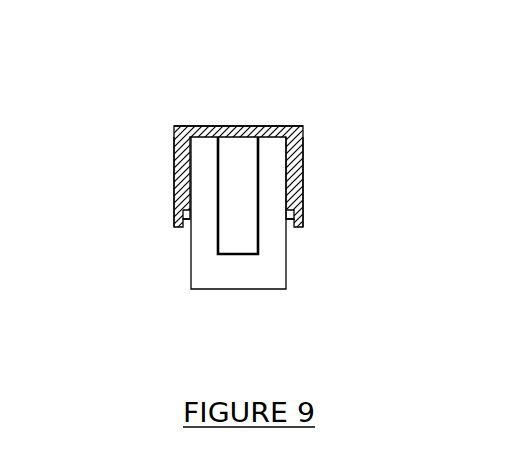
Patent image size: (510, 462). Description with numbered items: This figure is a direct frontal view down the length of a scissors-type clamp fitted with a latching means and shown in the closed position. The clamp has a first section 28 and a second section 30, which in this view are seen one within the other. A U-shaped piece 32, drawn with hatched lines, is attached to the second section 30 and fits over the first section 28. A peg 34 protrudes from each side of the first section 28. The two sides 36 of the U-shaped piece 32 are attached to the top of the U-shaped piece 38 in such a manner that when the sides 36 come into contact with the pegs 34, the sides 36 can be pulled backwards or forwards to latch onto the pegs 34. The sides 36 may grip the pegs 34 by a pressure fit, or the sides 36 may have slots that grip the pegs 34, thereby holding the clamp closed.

The first section 28 is at (273, 267).
The second section 30 is at (230, 146).
The U-shaped piece 32 is at (162, 127).
The peg 34 is at (175, 219).
The sides of the U-shaped piece 36 is at (175, 163).
The top of the U-shaped piece 38 is at (200, 127).